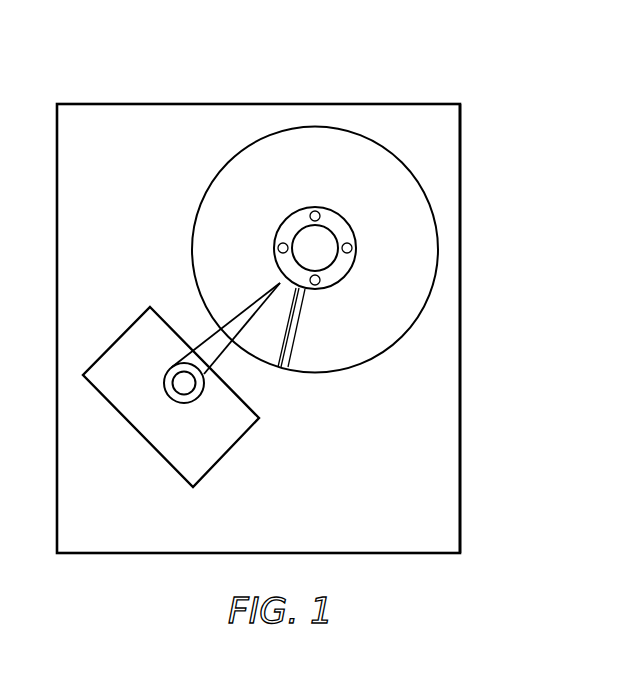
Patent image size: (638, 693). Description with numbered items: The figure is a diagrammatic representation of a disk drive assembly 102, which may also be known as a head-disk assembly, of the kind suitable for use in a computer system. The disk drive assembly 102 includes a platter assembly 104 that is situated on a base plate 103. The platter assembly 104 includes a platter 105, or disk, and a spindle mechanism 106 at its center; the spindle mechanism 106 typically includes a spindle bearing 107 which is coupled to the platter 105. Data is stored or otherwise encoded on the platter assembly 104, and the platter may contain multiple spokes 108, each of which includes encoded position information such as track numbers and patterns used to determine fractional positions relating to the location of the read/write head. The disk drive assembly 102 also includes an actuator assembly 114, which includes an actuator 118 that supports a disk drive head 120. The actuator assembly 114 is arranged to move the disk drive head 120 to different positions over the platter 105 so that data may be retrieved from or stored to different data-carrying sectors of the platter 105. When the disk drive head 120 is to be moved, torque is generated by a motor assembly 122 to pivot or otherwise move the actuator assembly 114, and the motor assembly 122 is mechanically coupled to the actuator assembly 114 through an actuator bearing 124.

The disk drive assembly 102 is at (440, 100).
The base plate 103 is at (460, 388).
The platter assembly 104 is at (372, 370).
The platter 105 is at (207, 244).
The spindle mechanism 106 is at (351, 211).
The spindle bearing 107 is at (352, 273).
The spoke 108 is at (280, 362).
The actuator assembly 114 is at (171, 371).
The actuator 118 is at (215, 347).
The disk drive head 120 is at (280, 284).
The motor assembly 122 is at (169, 446).
The actuator bearing 124 is at (170, 396).